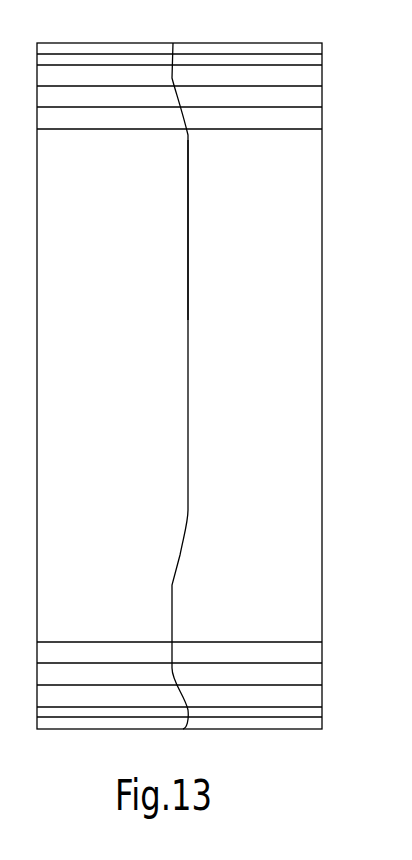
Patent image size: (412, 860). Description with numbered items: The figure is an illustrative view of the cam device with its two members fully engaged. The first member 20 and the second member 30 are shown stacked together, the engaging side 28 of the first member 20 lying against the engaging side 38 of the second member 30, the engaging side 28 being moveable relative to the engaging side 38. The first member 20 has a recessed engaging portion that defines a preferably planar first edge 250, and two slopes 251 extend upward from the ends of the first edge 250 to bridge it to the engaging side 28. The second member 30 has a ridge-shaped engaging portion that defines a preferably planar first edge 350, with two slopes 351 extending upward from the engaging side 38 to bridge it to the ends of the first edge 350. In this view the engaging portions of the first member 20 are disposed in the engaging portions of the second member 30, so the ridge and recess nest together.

The engaging side 38 is at (172, 55).
The engaging side 28 is at (172, 70).
The slopes 351 is at (176, 107).
The slopes 251 is at (181, 118).
The first edge 350 is at (188, 252).
The first edge 250 is at (188, 286).
The second member 30 is at (102, 693).
The first member 20 is at (285, 702).